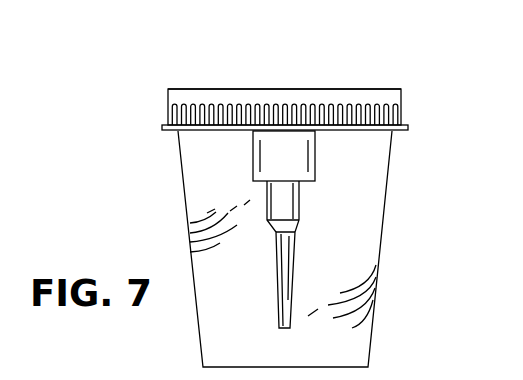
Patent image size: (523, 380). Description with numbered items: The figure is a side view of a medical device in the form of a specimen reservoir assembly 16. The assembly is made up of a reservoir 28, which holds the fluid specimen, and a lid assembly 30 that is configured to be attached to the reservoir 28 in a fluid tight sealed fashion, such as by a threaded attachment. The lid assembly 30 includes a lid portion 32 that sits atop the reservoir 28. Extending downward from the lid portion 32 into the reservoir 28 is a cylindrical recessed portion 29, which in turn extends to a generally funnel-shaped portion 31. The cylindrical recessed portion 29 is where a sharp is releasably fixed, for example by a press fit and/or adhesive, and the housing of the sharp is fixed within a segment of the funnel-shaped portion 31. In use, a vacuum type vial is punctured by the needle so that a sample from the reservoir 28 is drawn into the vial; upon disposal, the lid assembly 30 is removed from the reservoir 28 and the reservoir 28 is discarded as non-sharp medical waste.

The specimen reservoir assembly 16 is at (326, 65).
The reservoir 28 is at (376, 273).
The cylindrical recessed portion 29 is at (315, 150).
The lid assembly 30 is at (204, 87).
The funnel-shaped portion 31 is at (299, 204).
The lid portion 32 is at (338, 96).